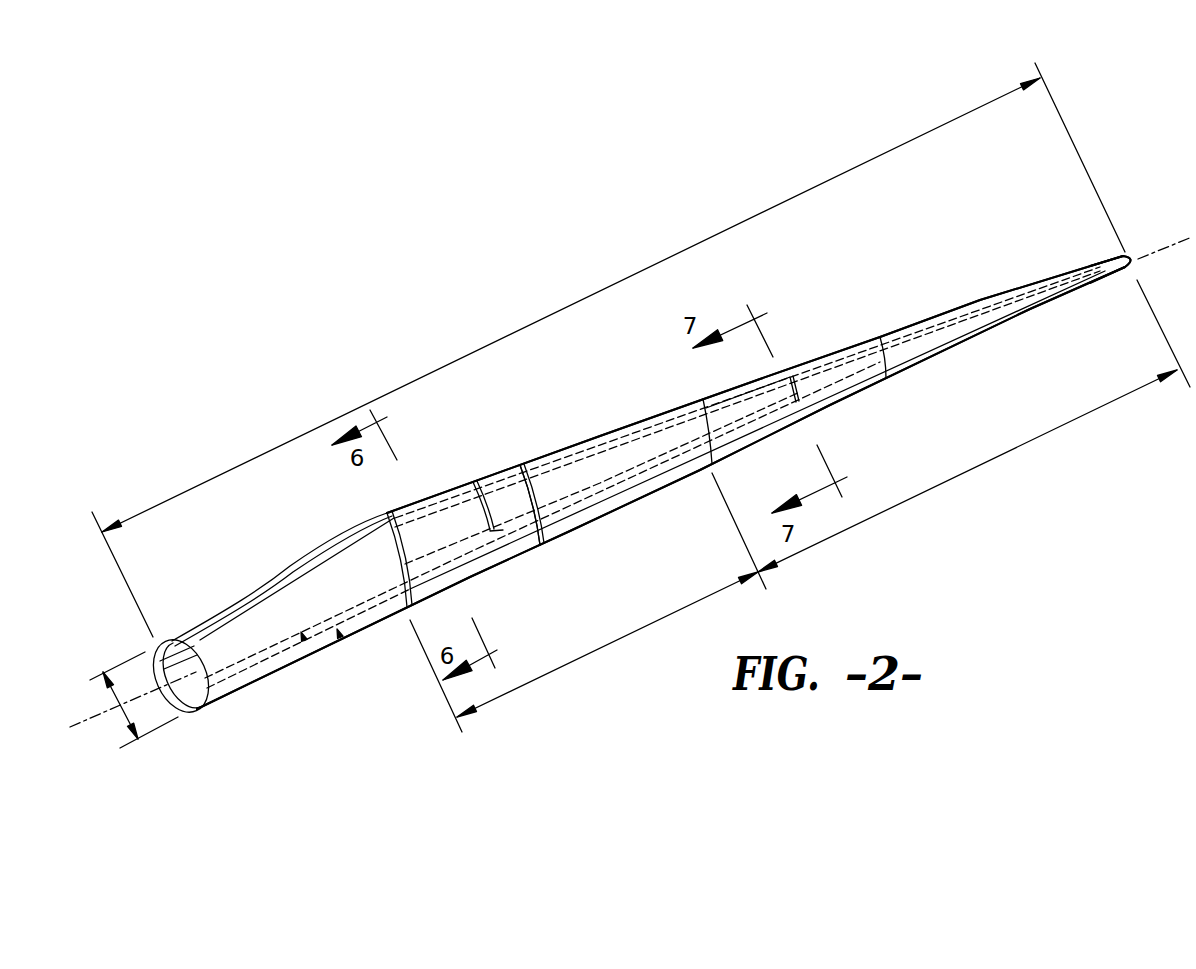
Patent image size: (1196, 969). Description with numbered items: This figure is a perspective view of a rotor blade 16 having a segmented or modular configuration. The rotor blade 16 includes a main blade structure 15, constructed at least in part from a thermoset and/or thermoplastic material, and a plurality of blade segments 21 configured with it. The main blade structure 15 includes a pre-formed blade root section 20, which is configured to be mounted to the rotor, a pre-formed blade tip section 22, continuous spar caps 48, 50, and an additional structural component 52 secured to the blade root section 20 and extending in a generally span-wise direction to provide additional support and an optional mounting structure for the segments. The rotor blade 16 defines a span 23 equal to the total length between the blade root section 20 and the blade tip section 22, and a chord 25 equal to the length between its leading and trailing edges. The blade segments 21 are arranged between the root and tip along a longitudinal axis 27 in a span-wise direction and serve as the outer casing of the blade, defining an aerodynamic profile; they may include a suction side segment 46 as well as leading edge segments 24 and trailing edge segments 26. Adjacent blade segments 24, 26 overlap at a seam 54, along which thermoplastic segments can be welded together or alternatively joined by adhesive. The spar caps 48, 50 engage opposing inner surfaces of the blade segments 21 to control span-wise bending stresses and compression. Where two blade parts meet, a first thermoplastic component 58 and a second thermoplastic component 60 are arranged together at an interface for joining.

The main blade structure 15 is at (337, 629).
The rotor blade 16 is at (333, 317).
The blade root section 20 is at (187, 630).
The blade segment 21 is at (398, 504).
The blade tip section 22 is at (1013, 325).
The span 23 is at (587, 294).
The leading edge segment 24 is at (611, 512).
The chord 25 is at (122, 708).
The trailing edge segment 26 is at (447, 499).
The longitudinal axis 27 is at (145, 695).
The suction side segment 46 is at (841, 361).
The spar cap 48 is at (150, 673).
The spar cap 50 is at (252, 657).
The additional structural component 52 is at (578, 462).
The seam 54 is at (480, 481).
The first thermoplastic component 58 is at (580, 657).
The second thermoplastic component 60 is at (946, 486).